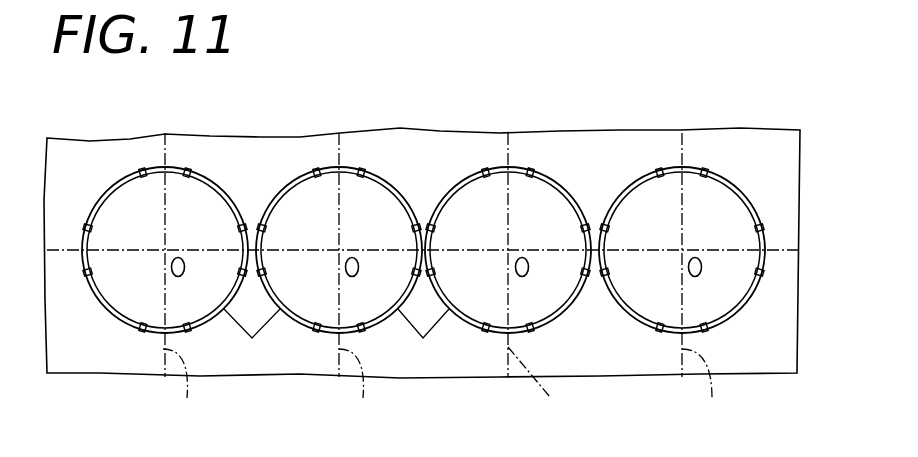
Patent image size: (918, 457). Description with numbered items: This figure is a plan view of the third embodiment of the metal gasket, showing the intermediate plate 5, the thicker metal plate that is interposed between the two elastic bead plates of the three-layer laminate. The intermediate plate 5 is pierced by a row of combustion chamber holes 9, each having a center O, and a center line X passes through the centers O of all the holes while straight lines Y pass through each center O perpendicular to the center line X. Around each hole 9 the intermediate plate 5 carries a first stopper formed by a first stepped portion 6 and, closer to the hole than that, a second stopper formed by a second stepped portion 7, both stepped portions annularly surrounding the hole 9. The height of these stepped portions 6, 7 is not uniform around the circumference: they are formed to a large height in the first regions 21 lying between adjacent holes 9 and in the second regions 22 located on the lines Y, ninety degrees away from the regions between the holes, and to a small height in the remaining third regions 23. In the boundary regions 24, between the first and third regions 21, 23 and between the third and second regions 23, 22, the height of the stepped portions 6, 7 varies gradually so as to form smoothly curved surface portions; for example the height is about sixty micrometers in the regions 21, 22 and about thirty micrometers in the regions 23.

The intermediate plate 5 is at (700, 126).
The first stepped portions 6 is at (103, 304).
The second stepped portions 7 is at (105, 306).
The combustion chamber holes 9 is at (116, 234).
The first regions 21 is at (242, 238).
The second regions 22 is at (155, 168).
The third regions 23 is at (224, 191).
The boundary regions 24 is at (190, 168).
The center line X is at (80, 250).
The straight lines Y is at (443, 387).
The centers O is at (437, 267).